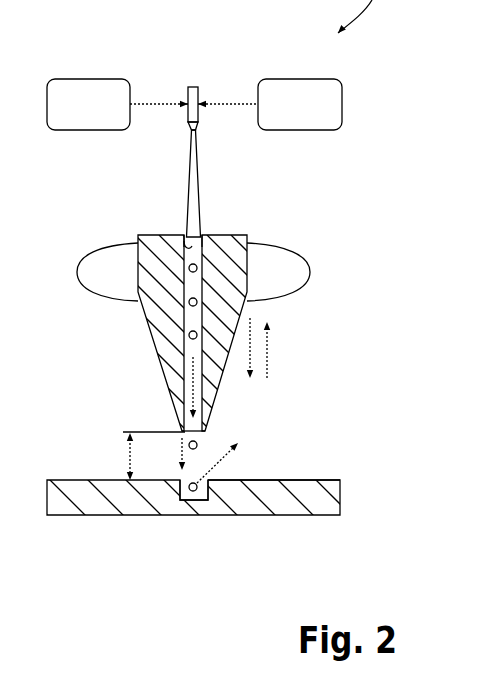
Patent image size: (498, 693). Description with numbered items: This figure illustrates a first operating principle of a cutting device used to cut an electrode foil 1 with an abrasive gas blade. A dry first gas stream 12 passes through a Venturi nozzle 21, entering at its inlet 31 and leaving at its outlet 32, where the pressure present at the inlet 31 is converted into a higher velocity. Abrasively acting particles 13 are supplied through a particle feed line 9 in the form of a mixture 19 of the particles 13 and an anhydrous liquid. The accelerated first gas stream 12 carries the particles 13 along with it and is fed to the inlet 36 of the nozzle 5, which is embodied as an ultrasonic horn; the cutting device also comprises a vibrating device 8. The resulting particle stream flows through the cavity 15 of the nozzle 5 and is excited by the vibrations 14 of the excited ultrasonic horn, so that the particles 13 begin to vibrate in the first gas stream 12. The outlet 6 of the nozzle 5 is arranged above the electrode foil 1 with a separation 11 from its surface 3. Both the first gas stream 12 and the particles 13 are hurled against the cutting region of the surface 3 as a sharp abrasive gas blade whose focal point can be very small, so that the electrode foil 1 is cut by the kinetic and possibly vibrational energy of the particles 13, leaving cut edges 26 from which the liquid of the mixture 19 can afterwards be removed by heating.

The electrode foil 1 is at (292, 508).
The surface 3 is at (322, 478).
The nozzle 5 is at (165, 322).
The outlet 6 is at (200, 436).
The vibrating device 8 is at (85, 260).
The particle feed line 9 is at (229, 107).
The separation 11 is at (128, 450).
The first gas stream 12 is at (145, 100).
The particles 13 is at (243, 103).
The vibrations 14 is at (268, 353).
The cavity 15 is at (195, 258).
The mixture 19 is at (227, 103).
The Venturi nozzle 21 is at (200, 197).
The cut edges 26 is at (187, 492).
The inlet 31 is at (192, 87).
The outlet 32 is at (190, 247).
The inlet 36 is at (185, 243).